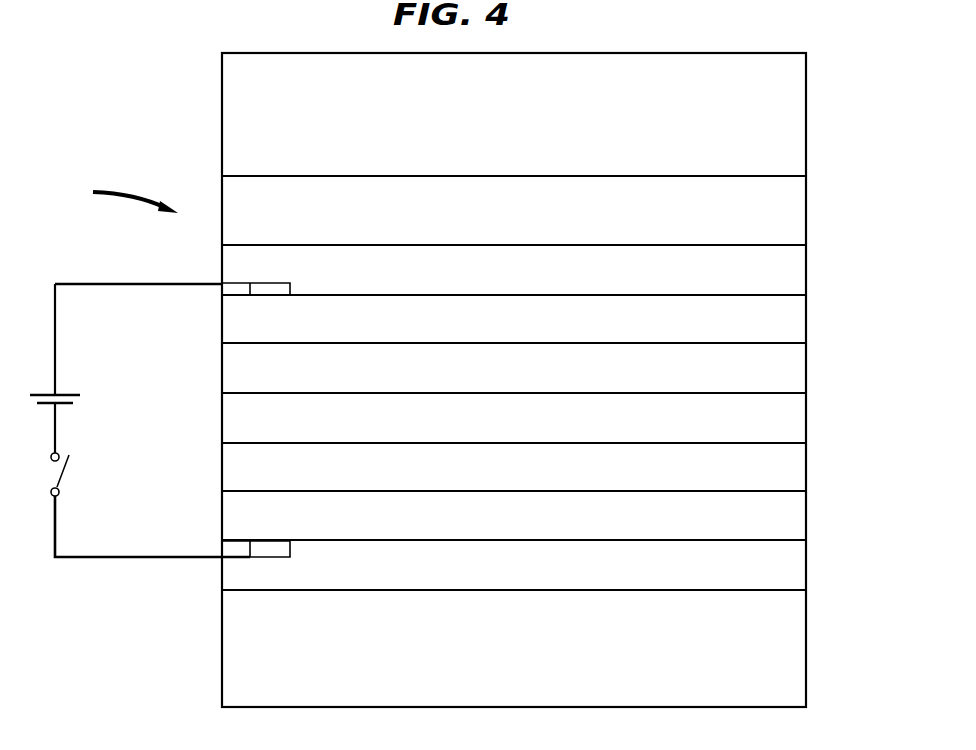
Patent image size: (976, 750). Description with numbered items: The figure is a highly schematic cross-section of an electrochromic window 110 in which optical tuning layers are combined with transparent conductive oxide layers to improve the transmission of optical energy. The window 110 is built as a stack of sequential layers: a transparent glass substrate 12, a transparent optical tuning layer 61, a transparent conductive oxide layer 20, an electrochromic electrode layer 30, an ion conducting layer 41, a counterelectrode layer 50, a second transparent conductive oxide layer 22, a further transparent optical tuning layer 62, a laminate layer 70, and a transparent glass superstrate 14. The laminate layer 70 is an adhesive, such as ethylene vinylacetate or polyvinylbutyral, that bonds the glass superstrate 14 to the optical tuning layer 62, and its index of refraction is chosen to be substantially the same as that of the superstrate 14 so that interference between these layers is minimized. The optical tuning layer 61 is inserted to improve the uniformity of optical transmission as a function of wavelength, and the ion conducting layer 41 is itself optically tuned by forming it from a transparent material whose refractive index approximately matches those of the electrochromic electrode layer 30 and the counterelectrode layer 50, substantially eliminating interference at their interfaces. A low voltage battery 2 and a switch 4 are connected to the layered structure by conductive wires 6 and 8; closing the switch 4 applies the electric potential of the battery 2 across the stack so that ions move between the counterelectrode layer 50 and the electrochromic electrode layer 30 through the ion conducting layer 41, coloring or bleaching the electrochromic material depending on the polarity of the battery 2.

The low voltage battery 2 is at (42, 394).
The switch 4 is at (63, 469).
The conductive wire 6 is at (102, 283).
The conductive wire 8 is at (120, 559).
The transparent glass substrate 12 is at (797, 625).
The transparent glass superstrate 14 is at (797, 98).
The transparent conductive oxide layer 20 is at (788, 509).
The transparent conductive oxide layer 22 is at (797, 317).
The electrochromic electrode layer 30 is at (797, 463).
The ion conducting layer 41 is at (797, 418).
The counterelectrode layer 50 is at (797, 364).
The transparent optical tuning layer 61 is at (797, 576).
The transparent optical tuning layer 62 is at (797, 272).
The laminate layer 70 is at (797, 210).
The window 110 is at (117, 196).